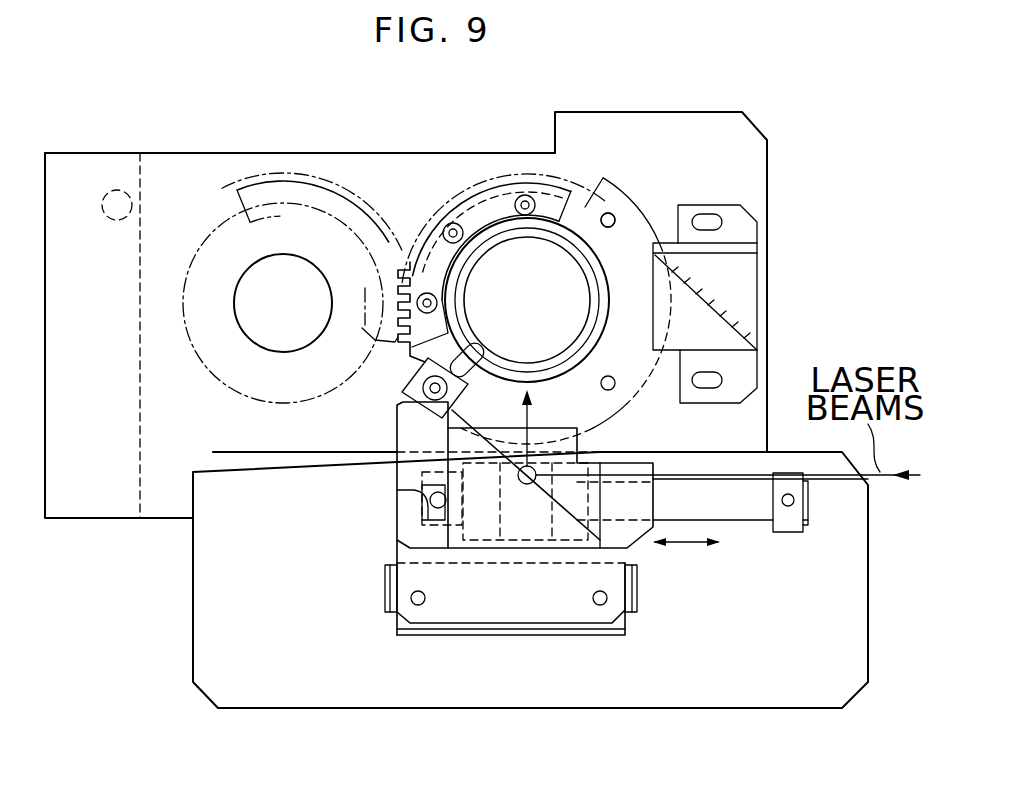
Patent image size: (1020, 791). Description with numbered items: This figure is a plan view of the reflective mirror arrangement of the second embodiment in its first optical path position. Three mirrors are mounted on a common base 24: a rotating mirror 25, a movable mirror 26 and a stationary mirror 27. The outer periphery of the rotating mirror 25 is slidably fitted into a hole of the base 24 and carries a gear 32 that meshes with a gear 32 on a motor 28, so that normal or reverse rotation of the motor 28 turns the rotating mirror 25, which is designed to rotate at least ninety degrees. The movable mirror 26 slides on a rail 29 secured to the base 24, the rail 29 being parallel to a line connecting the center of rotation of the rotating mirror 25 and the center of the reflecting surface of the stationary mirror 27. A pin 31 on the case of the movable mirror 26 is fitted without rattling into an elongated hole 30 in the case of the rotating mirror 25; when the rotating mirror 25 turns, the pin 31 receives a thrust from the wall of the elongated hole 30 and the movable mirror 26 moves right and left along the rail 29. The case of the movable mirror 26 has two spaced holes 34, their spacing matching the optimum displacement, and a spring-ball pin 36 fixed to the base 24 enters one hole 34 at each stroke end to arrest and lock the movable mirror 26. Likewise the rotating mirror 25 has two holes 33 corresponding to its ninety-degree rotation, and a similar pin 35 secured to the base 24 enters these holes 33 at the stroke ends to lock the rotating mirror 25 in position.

The base 24 is at (752, 164).
The rotating mirror 25 is at (556, 290).
The movable mirror 26 is at (528, 525).
The stationary mirror 27 is at (735, 280).
The motor 28 is at (263, 293).
The rail 29 is at (748, 513).
The elongated hole 30 is at (462, 422).
The pin 31 is at (400, 367).
The gear 32 is at (322, 182).
The holes 33 is at (611, 213).
The holes 34 is at (418, 606).
The pin 35 is at (616, 220).
The pin 36 is at (640, 603).